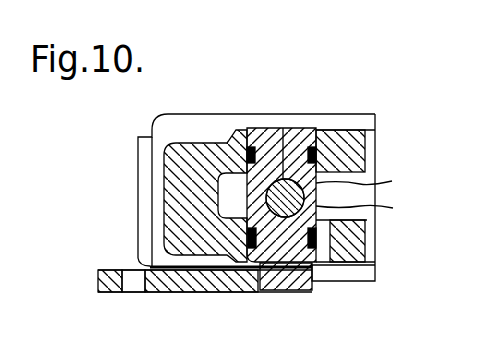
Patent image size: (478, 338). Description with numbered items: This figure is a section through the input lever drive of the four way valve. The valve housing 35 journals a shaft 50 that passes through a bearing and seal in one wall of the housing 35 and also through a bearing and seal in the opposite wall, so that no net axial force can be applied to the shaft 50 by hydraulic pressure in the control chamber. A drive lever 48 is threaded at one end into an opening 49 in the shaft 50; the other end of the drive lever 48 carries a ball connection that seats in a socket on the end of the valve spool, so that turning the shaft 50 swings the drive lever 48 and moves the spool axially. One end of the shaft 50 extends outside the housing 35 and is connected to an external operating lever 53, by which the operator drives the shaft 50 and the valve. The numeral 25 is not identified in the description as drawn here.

The drive lever 48 is at (285, 130).
The upper member 25 is at (370, 149).
The opening 49 is at (366, 180).
The shaft 50 is at (366, 206).
The housing 35 is at (368, 243).
The external operating lever 53 is at (200, 286).